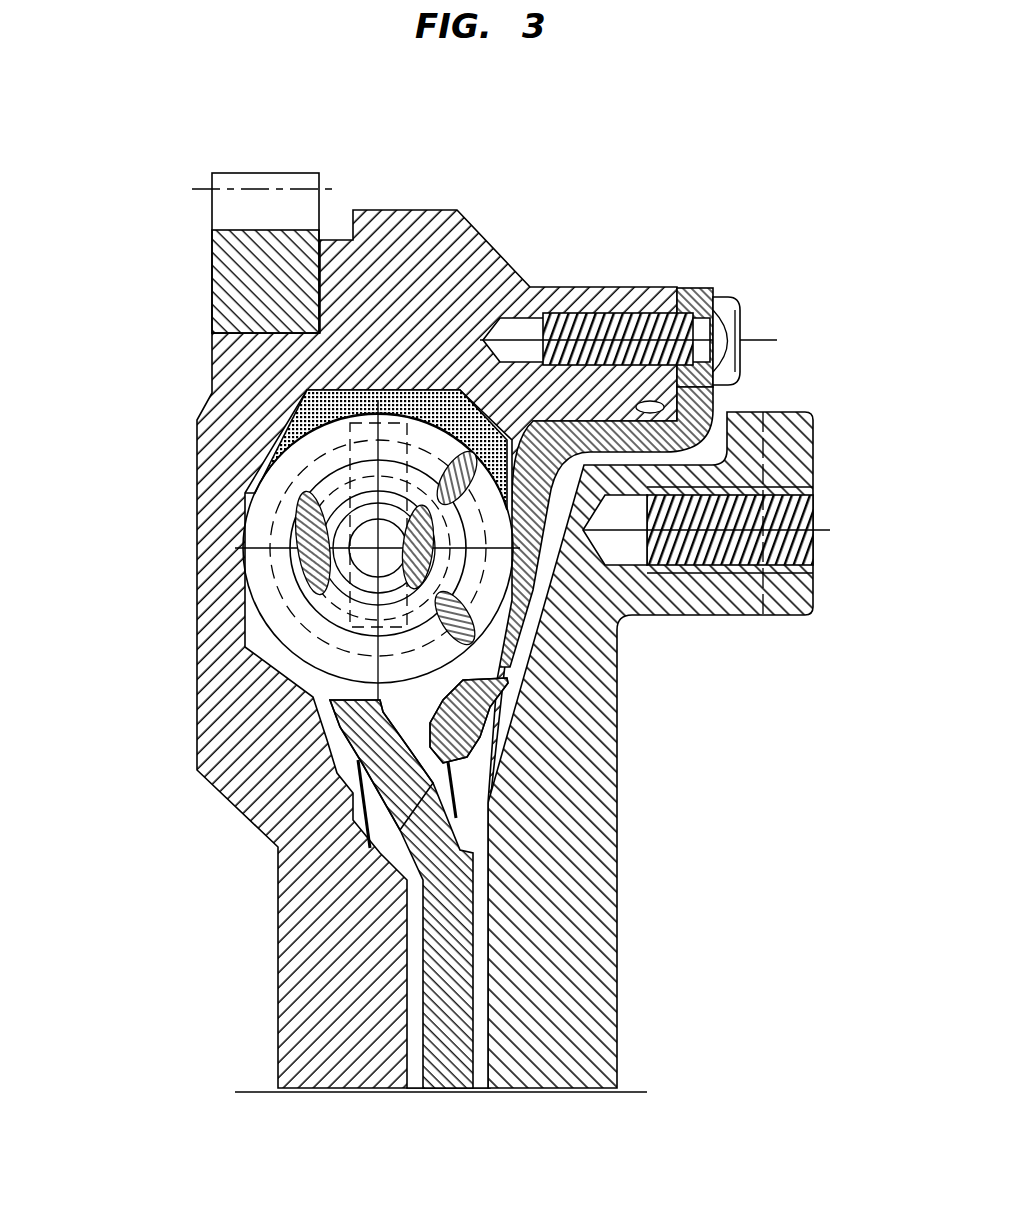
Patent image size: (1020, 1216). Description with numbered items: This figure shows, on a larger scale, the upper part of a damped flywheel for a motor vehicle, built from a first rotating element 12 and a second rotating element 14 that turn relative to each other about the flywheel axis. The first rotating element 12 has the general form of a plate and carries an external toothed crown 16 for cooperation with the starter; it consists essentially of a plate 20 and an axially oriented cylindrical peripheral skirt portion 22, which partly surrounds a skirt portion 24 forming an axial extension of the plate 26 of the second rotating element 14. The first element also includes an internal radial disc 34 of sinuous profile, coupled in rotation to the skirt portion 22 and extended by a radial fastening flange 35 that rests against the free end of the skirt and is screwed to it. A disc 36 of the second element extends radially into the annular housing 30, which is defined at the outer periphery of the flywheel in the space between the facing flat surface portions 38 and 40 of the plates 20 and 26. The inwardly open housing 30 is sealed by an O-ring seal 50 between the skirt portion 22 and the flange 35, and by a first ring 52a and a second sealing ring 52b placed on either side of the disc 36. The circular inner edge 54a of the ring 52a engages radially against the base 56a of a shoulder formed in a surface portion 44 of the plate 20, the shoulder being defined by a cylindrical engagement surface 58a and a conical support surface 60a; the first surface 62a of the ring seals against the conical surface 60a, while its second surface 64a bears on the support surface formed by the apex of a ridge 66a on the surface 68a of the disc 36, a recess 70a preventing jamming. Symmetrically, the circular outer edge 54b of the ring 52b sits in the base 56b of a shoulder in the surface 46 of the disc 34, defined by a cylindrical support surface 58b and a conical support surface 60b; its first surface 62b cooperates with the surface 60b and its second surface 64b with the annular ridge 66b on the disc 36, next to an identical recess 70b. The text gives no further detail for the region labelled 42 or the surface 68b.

The first rotating element 12 is at (228, 1052).
The second rotating element 14 is at (638, 1061).
The external toothed crown 16 is at (275, 245).
The plate 20 is at (290, 1058).
The cylindrical peripheral annular skirt portion 22 is at (600, 287).
The cylindrical peripheral annular skirt portion 24 is at (818, 612).
The plate 26 is at (590, 1093).
The annular housing 30 is at (264, 652).
The internal radial disc 34 is at (605, 625).
The radial flange 35 is at (705, 287).
The disc 36 is at (450, 1070).
The flat surface portion 38 is at (430, 1087).
The flat surface portion 40 is at (490, 1060).
The bearing 42 is at (270, 432).
The surface portion 44 is at (352, 824).
The surface 46 is at (513, 677).
The O-ring seal 50 is at (693, 368).
The first ring 52a is at (373, 850).
The second sealing ring 52b is at (470, 820).
The circular inner edge 54a is at (377, 883).
The circular outer edge 54b is at (505, 745).
The base of shoulder 56a is at (404, 742).
The base of shoulder 56b is at (469, 720).
The cylindrical engagement surface 58a is at (380, 910).
The cylindrical support surface 58b is at (470, 765).
The conical support surface 60a is at (380, 858).
The conical support surface 60b is at (458, 803).
The first surface 62a is at (360, 814).
The first surface 62b is at (488, 870).
The second surface 64a is at (350, 700).
The second surface 64b is at (505, 1073).
The ridge 66a is at (347, 800).
The annular ridge 66b is at (487, 845).
The surface 68a is at (385, 868).
The second flow channel 68b is at (490, 935).
The recess 70a is at (352, 775).
The recess 70b is at (490, 900).